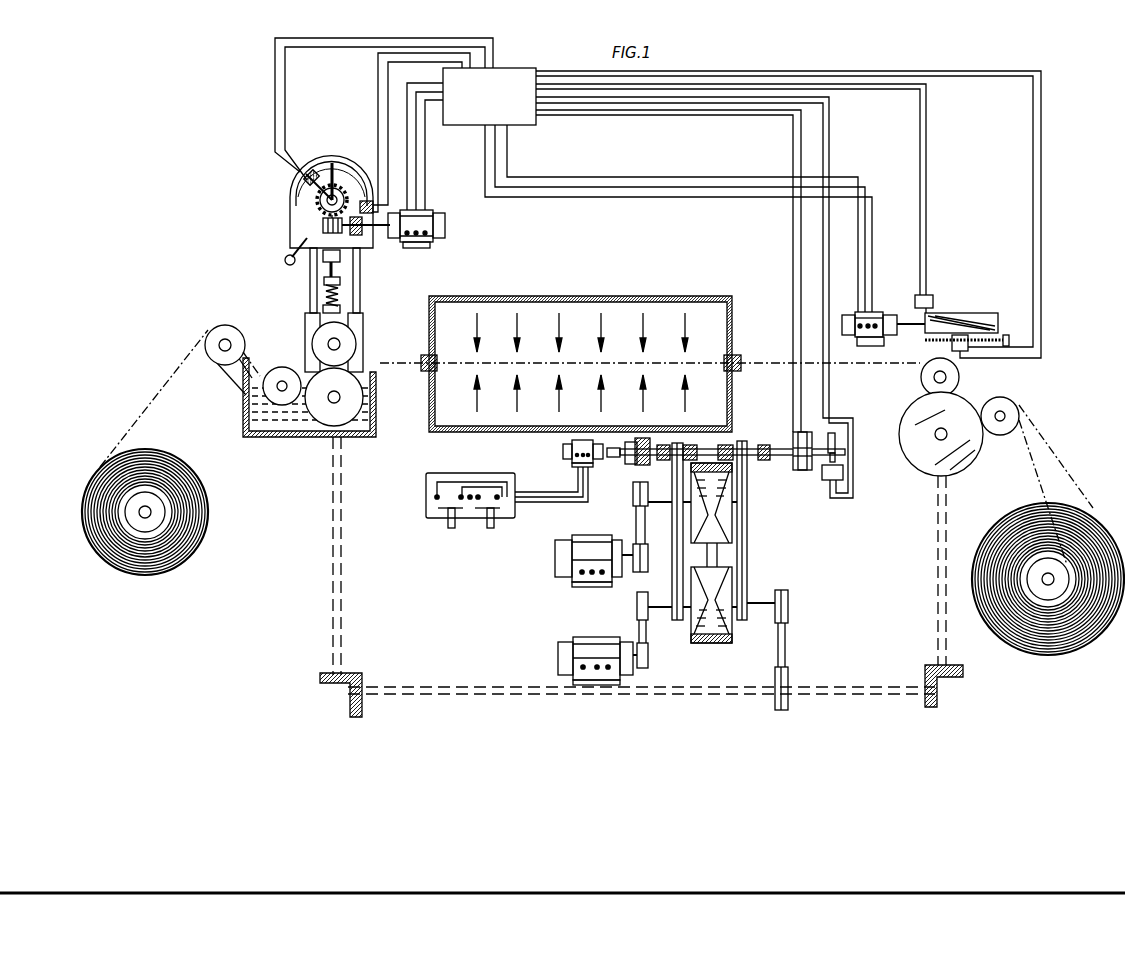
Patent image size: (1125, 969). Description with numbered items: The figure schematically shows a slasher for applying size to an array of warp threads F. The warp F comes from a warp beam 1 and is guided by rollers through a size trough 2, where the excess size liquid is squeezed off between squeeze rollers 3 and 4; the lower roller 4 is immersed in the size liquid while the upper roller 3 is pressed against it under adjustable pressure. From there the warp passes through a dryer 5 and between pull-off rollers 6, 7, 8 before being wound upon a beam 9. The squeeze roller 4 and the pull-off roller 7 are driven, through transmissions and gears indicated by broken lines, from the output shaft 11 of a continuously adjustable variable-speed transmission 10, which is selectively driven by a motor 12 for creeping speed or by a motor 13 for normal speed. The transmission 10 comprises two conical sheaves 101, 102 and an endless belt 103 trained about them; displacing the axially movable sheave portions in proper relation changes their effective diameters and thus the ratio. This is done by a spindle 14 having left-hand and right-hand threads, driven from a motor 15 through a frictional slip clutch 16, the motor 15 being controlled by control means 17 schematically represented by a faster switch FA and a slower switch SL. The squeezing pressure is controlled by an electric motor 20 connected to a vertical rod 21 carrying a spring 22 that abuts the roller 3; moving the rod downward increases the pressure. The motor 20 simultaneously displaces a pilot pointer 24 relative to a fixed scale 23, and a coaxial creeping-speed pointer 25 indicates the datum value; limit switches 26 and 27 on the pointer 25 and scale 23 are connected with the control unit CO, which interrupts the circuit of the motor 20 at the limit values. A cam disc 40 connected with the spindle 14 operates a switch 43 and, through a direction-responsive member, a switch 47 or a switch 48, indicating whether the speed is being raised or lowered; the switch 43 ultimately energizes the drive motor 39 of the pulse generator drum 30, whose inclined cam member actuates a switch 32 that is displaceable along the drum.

The warp beam 1 is at (176, 471).
The size trough 2 is at (246, 402).
The upper squeeze roller 3 is at (356, 345).
The lower squeeze roller 4 is at (362, 399).
The dryer 5 is at (623, 308).
The pull-off roller 6 is at (927, 380).
The pull-off roller 7 is at (915, 443).
The pull-off roller 8 is at (1008, 405).
The beam 9 is at (1018, 532).
The variable-speed transmission 10 is at (716, 560).
The output shaft 11 is at (758, 605).
The motor 12 is at (585, 651).
The motor 13 is at (583, 556).
The spindle 14 is at (692, 448).
The motor 15 is at (562, 452).
The frictional slip clutch 16 is at (636, 438).
The control means 17 is at (467, 473).
The electric motor 20 is at (445, 225).
The vertical rod 21 is at (336, 272).
The spring 22 is at (342, 303).
The scale 23 is at (348, 163).
The pilot pointer 24 is at (330, 163).
The creeping-speed pointer 25 is at (318, 195).
The limit switch 26 is at (304, 177).
The limit switch 27 is at (369, 214).
The drum 30 is at (977, 316).
The switch 32 is at (968, 351).
The drive motor 39 is at (887, 313).
The cam disc 40 is at (837, 452).
The switch 43 is at (843, 472).
The switch 47 is at (793, 433).
The switch 48 is at (793, 467).
The upper conical sheave 101 is at (729, 492).
The lower conical sheave 102 is at (692, 625).
The endless belt 103 is at (718, 643).
The warp threads F is at (158, 394).
The faster switch FA is at (431, 548).
The slower switch SL is at (497, 548).
The control unit CO is at (498, 105).